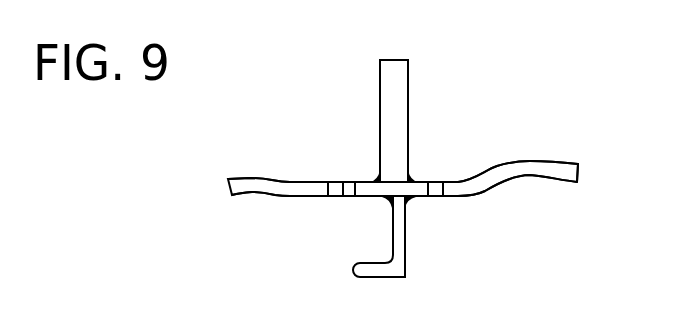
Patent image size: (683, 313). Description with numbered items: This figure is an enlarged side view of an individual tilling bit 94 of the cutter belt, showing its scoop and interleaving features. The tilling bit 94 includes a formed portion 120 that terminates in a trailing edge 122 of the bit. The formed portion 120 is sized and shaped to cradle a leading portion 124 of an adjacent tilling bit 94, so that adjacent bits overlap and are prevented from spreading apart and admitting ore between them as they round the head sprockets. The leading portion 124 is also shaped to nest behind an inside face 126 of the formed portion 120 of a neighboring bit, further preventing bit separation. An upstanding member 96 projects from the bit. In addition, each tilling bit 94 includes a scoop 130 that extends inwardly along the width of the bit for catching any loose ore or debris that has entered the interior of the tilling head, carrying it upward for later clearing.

The tilling bit 94 is at (495, 87).
The upright post 96 is at (390, 90).
The formed portion 120 is at (530, 165).
The trailing edge 122 is at (578, 165).
The leading portion 124 is at (250, 181).
The inside face 126 is at (535, 178).
The scoop 130 is at (402, 245).